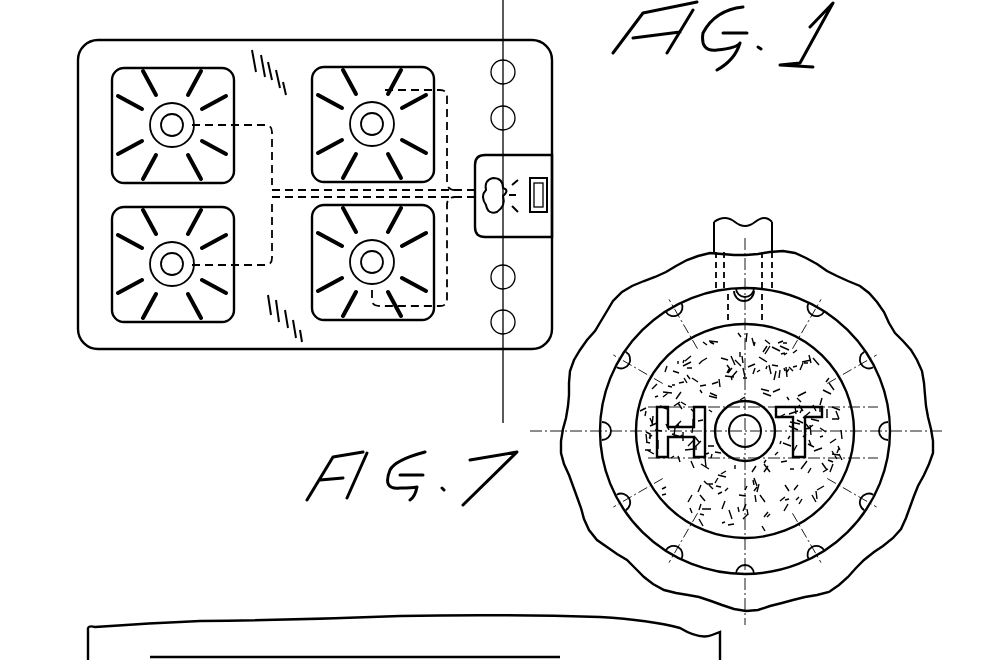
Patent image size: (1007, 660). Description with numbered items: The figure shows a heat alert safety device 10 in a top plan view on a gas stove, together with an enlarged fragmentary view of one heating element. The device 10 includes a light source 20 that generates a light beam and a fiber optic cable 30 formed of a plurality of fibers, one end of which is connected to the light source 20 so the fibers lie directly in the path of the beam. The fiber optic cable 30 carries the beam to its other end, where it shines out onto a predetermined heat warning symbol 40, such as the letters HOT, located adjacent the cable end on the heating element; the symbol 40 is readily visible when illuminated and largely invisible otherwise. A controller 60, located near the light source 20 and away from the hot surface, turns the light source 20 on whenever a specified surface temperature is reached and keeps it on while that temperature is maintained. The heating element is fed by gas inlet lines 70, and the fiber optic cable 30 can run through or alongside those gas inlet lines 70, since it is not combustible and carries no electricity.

In FIG. 1, the heat alert safety device 10 is at (248, 305).
In FIG. 1, the light source 20 is at (500, 180).
In FIG. 7, the fiber optic cable 30 is at (760, 312).
In FIG. 1, the heat warning symbol 40 is at (150, 123).
In FIG. 7, the heat warning symbol 40 is at (755, 452).
In FIG. 1, the controller 60 is at (540, 225).
In FIG. 7, the gas inlet lines 70 is at (715, 228).